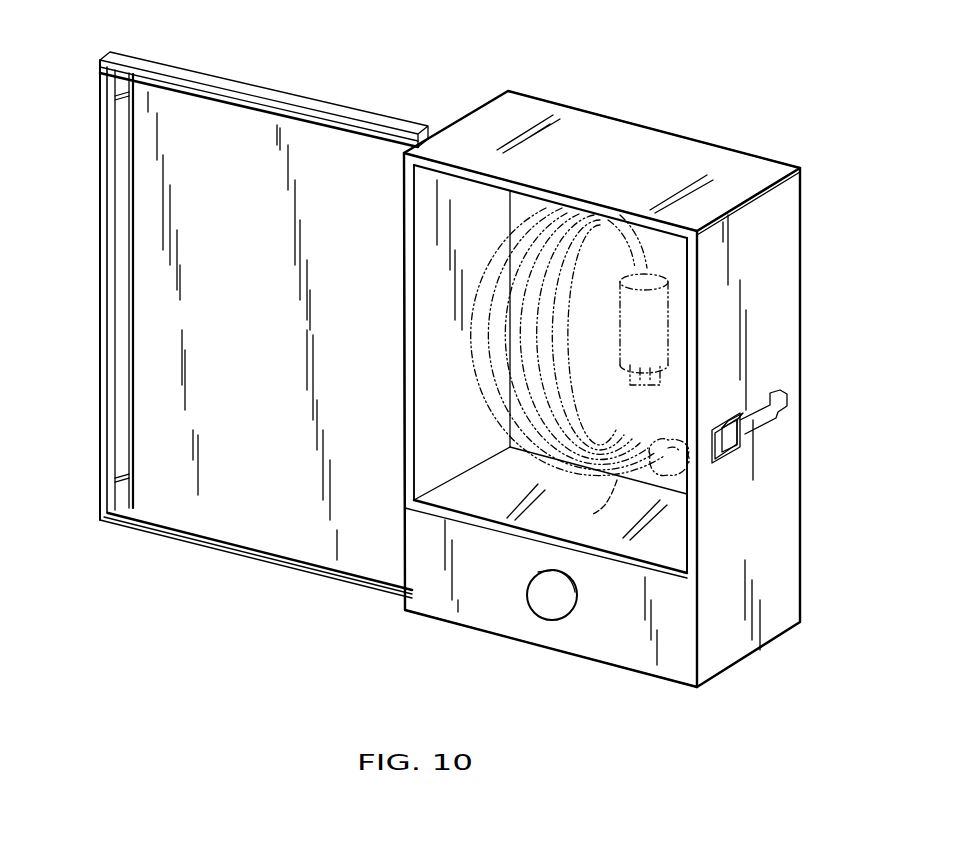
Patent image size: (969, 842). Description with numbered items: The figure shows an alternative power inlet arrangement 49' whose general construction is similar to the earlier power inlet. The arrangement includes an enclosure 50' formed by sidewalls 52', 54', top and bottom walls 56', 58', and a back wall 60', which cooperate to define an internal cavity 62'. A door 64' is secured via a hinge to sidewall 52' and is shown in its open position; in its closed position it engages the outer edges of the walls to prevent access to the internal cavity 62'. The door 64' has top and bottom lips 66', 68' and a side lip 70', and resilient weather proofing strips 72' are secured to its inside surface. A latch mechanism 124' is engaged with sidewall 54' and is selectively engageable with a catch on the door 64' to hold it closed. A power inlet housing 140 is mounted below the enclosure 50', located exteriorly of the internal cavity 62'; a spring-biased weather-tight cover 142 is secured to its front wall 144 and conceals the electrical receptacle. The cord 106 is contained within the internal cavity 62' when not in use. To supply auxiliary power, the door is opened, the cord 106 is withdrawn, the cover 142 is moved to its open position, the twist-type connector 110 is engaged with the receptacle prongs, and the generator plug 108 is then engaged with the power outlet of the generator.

The power inlet arrangement 49' is at (605, 134).
The enclosure 50' is at (629, 371).
The sidewall 52' is at (385, 381).
The sidewall 54' is at (775, 427).
The top wall 56' is at (602, 137).
The bottom wall 58' is at (518, 510).
The back wall 60' is at (734, 394).
The internal cavity 62' is at (550, 288).
The door 64' is at (196, 310).
The top lip 66' is at (264, 91).
The bottom lip 68' is at (256, 571).
The side lip 70' is at (76, 290).
The weather proofing strips 72' is at (89, 290).
The cord 106 is at (594, 506).
The generator plug 108 is at (653, 320).
The twist-type connector 110 is at (700, 485).
The latch mechanism 124' is at (784, 434).
The power inlet housing 140 is at (392, 613).
The cover 142 is at (552, 614).
The front wall 144 is at (477, 612).